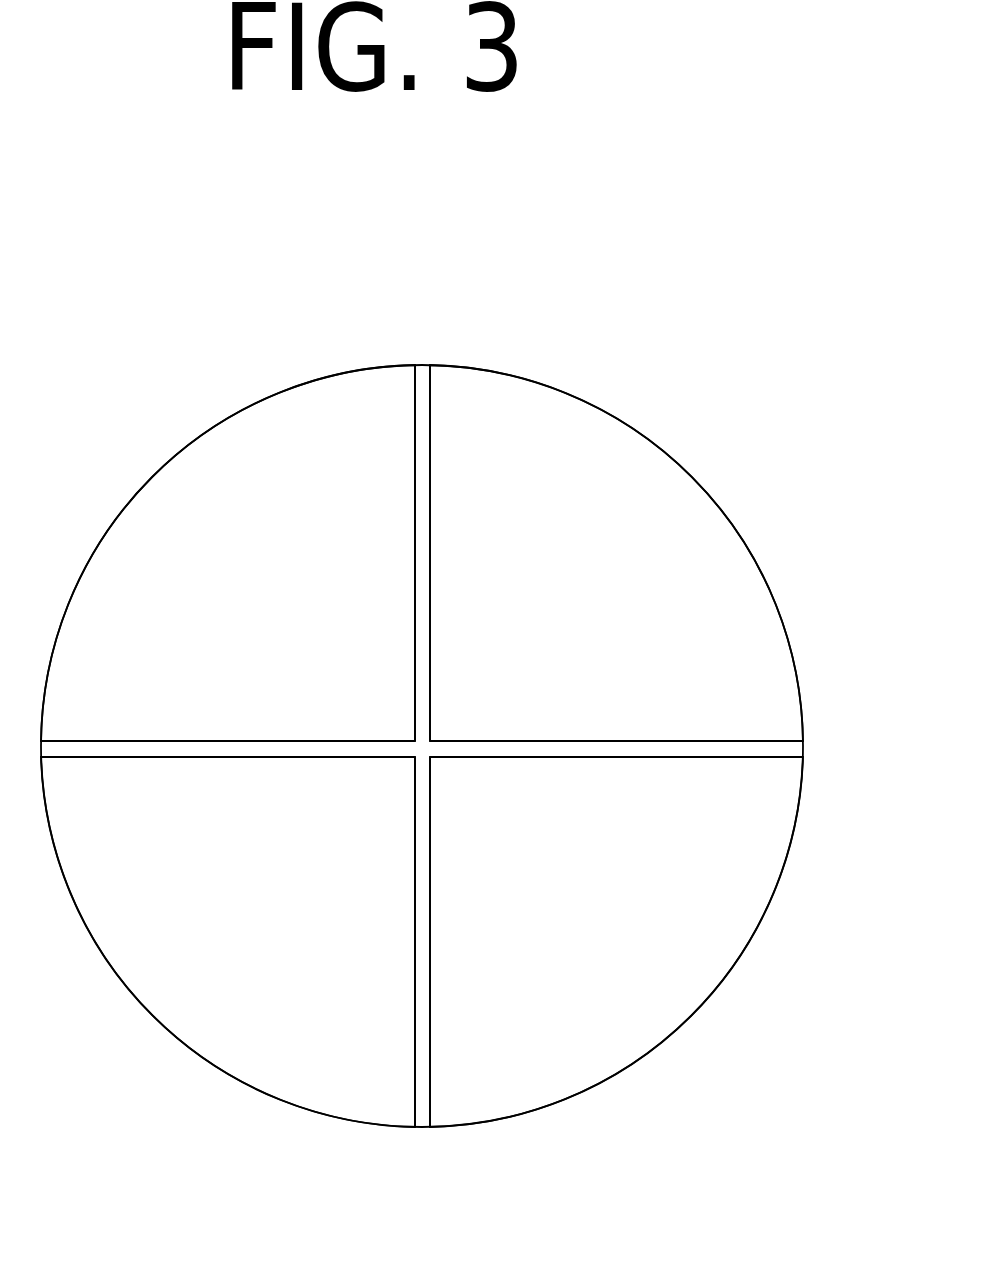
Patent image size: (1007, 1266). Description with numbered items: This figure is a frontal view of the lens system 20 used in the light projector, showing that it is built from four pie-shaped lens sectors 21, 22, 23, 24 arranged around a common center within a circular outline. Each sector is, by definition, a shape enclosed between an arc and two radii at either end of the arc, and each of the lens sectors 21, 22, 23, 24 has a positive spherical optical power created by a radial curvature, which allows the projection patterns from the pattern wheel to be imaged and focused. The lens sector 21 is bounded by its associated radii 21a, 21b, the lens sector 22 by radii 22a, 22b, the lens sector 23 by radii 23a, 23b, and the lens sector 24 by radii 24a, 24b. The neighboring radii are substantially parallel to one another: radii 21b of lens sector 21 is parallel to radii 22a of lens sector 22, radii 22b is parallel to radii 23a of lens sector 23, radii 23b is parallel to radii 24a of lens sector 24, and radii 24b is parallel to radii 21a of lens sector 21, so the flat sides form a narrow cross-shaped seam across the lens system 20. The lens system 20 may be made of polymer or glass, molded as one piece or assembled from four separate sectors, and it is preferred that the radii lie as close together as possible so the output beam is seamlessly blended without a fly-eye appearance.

The lens system 20 is at (232, 378).
The lens sector 21 is at (322, 596).
The radii of lens sector 21 21a is at (117, 727).
The radii of lens sector 21 21b is at (405, 435).
The lens sector 22 is at (635, 596).
The radii of lens sector 22 22a is at (442, 425).
The radii of lens sector 22 22b is at (580, 725).
The lens sector 23 is at (640, 935).
The radii of lens sector 23 23a is at (588, 760).
The radii of lens sector 23 23b is at (427, 1063).
The lens sector 24 is at (335, 933).
The radii of lens sector 24 24a is at (408, 1083).
The radii of lens sector 24 24b is at (114, 770).